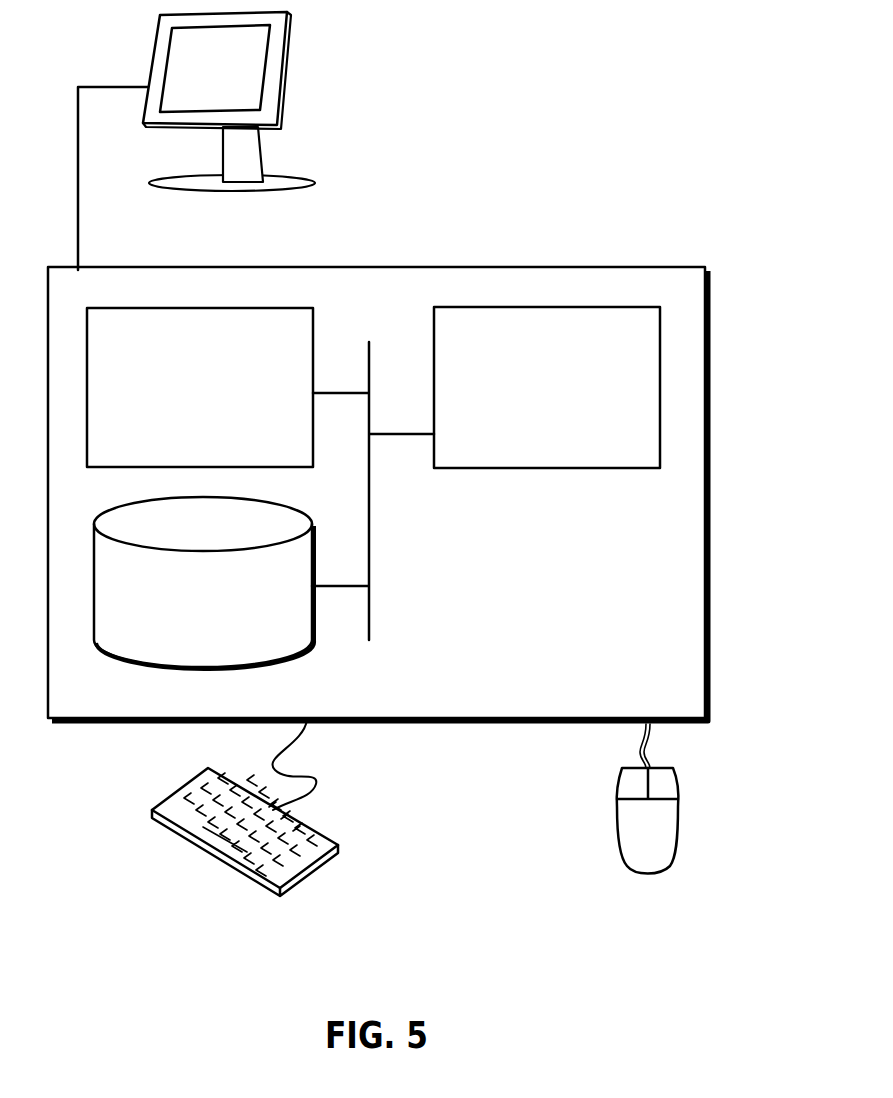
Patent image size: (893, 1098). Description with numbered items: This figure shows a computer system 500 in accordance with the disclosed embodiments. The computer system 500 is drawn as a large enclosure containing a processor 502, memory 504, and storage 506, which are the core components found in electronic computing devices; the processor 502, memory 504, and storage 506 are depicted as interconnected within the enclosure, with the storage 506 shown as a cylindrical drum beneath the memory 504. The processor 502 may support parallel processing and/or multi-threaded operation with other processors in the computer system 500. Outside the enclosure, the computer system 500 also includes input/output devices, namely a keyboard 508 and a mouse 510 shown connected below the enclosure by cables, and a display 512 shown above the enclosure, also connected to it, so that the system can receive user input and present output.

The computer system 500 is at (423, 243).
The processor 502 is at (572, 401).
The memory 504 is at (220, 400).
The storage 506 is at (229, 612).
The keyboard 508 is at (168, 832).
The mouse 510 is at (668, 842).
The display 512 is at (196, 141).